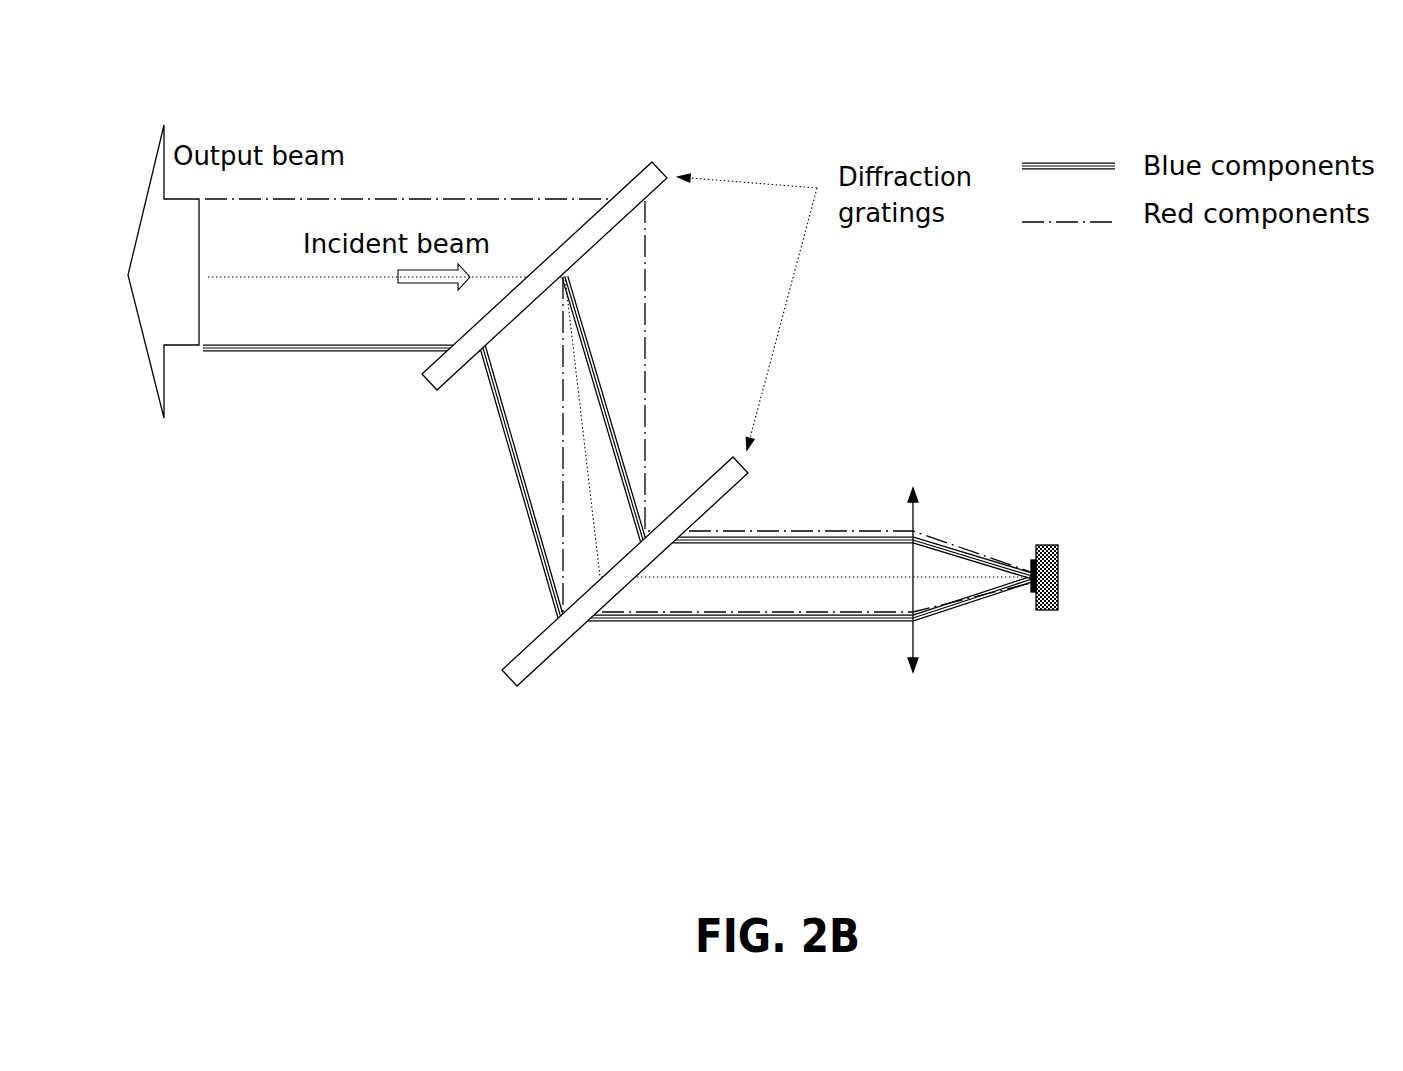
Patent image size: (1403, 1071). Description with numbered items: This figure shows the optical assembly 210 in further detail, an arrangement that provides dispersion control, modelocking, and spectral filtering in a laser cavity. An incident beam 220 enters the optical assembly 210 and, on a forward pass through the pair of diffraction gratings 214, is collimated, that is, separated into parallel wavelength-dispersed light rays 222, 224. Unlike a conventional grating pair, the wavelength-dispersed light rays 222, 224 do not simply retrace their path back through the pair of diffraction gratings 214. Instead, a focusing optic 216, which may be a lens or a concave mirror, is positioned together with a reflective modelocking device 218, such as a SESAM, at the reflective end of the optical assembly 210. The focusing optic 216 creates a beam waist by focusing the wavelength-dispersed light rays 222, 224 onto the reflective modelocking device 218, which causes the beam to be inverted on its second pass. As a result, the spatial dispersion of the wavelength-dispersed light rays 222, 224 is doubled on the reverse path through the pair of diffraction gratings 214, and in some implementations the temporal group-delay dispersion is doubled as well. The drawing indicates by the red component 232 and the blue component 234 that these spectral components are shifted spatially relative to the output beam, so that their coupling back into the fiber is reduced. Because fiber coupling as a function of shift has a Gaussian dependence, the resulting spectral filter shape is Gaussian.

The optical assembly 210 is at (262, 65).
The pair of diffraction gratings 214 is at (635, 180).
The focusing optic 216 is at (913, 730).
The reflective modelocking device 218 is at (1060, 578).
The incident beam 220 is at (272, 277).
The wavelength-dispersed light ray 222 is at (565, 493).
The wavelength-dispersed light ray 224 is at (592, 348).
The red component 232 is at (647, 268).
The blue component 234 is at (542, 565).